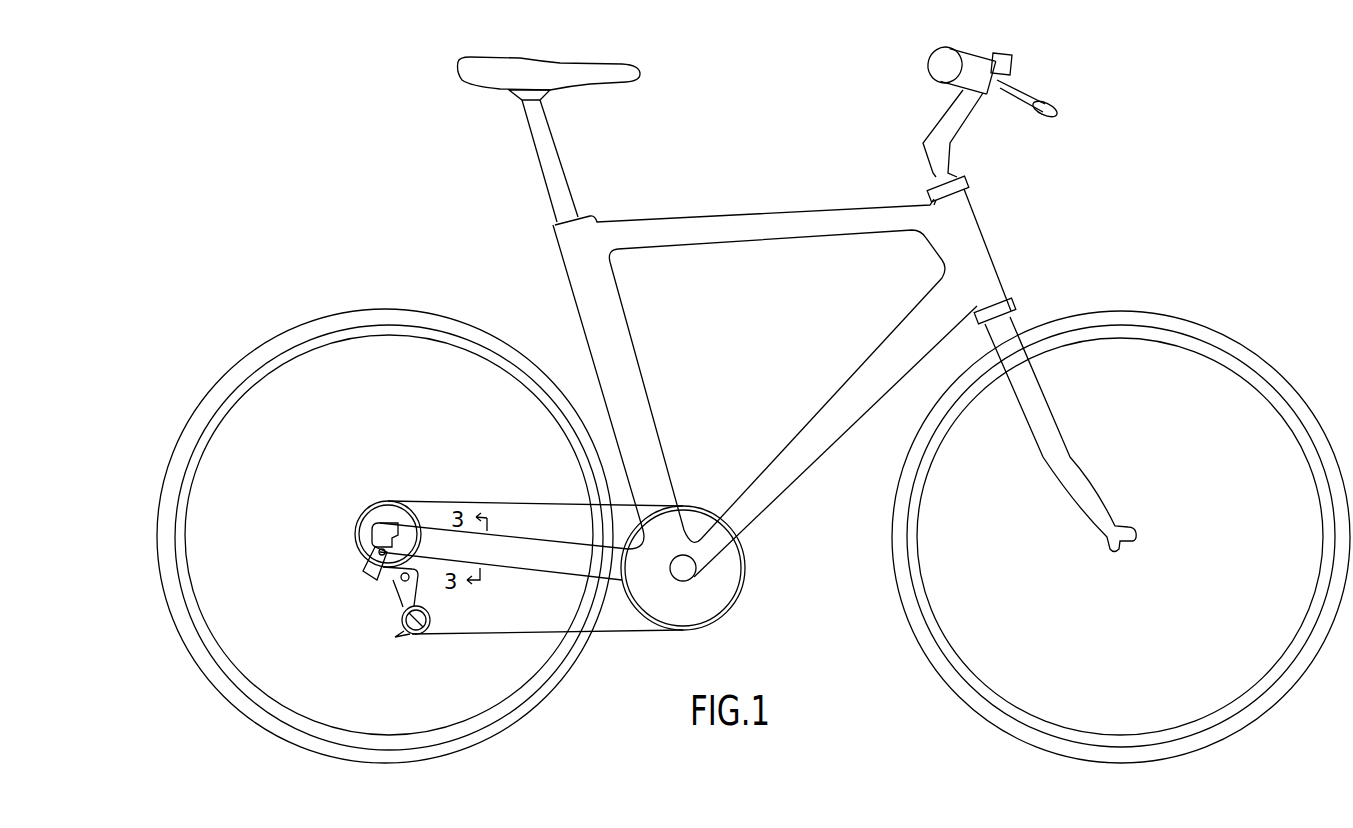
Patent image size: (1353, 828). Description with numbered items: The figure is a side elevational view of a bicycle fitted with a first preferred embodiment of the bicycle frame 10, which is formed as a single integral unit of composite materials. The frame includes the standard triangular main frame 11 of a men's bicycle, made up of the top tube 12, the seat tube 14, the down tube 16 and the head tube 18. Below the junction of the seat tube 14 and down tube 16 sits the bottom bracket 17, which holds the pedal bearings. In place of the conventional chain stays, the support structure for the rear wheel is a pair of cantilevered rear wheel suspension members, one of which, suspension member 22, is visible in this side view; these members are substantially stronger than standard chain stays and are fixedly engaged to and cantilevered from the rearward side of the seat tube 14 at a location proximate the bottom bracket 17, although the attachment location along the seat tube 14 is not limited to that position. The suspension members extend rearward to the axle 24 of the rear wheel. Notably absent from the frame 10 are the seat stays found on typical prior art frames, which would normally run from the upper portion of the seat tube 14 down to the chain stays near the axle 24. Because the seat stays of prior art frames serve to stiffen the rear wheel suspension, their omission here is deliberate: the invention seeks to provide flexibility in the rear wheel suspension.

The bicycle frame 10 is at (756, 369).
The triangular main frame 11 is at (832, 402).
The top tube 12 is at (788, 217).
The seat tube 14 is at (619, 336).
The down tube 16 is at (797, 450).
The bottom bracket 17 is at (660, 580).
The head tube 18 is at (975, 248).
The rear wheel suspension member 22 is at (526, 557).
The axle 24 is at (390, 530).